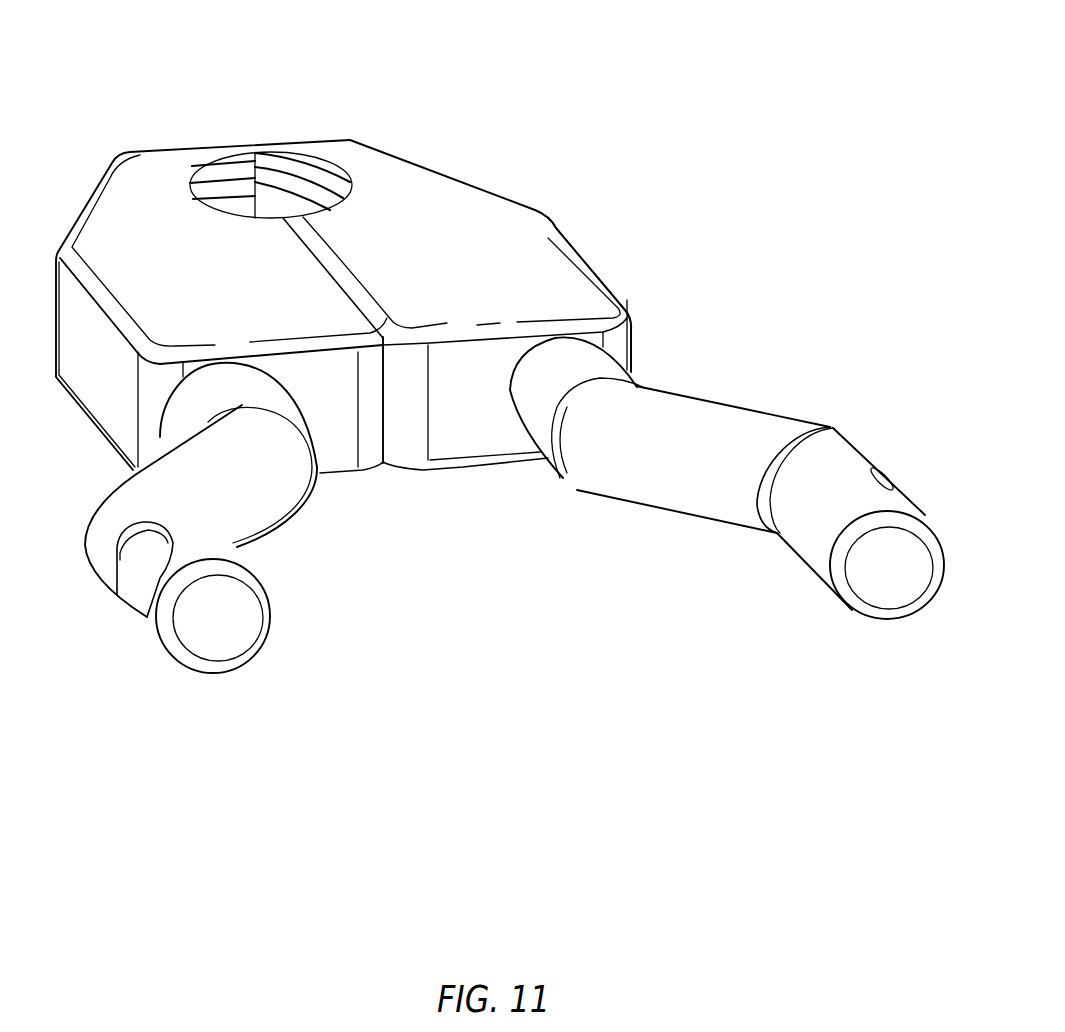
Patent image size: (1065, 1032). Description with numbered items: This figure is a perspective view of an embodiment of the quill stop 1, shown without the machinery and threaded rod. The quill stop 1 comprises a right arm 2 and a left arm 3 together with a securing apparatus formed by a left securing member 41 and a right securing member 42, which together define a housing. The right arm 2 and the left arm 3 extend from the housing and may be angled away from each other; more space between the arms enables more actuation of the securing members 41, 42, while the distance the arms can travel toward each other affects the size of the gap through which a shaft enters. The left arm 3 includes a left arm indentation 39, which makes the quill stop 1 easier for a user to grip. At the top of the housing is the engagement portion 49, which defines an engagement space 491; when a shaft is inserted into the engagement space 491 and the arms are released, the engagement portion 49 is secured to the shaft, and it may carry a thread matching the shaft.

The quill stop 1 is at (567, 143).
The right arm 2 is at (710, 420).
The left arm 3 is at (112, 512).
The left arm indentation 39 is at (138, 592).
The left securing member 41 is at (137, 227).
The right securing member 42 is at (377, 178).
The engagement portion 49 is at (301, 153).
The engagement space 491 is at (305, 183).